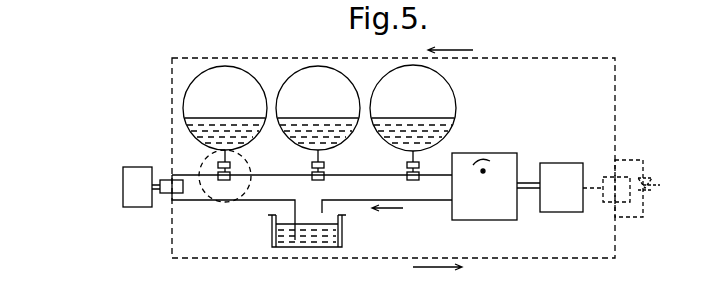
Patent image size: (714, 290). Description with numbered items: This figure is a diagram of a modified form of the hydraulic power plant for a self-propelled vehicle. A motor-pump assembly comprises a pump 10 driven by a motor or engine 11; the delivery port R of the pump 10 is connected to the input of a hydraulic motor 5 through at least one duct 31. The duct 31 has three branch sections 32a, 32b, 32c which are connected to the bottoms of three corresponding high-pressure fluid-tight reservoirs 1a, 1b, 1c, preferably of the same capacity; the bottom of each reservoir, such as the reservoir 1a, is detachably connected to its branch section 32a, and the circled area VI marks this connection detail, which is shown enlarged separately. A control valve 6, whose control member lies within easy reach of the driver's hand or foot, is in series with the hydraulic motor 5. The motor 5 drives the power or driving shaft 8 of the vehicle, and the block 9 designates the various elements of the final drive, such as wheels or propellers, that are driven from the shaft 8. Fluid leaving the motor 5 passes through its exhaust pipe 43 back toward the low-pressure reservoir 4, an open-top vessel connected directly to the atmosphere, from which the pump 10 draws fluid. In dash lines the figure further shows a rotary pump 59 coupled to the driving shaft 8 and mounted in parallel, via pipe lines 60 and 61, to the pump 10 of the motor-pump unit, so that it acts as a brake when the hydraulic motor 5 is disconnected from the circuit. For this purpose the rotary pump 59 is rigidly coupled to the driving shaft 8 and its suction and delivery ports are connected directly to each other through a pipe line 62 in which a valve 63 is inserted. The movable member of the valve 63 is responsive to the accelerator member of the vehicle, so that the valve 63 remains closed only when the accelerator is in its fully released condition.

The high-pressure fluid-tight reservoir 1a is at (210, 67).
The high-pressure fluid-tight reservoir 1b is at (290, 72).
The high-pressure fluid-tight reservoir 1c is at (385, 73).
The low-pressure reservoir 4 is at (272, 237).
The hydraulic motor 5 is at (477, 220).
The control valve 6 is at (483, 171).
The driving shaft 8 is at (598, 190).
The final drive 9 is at (560, 163).
The pump 10 is at (170, 195).
The motor or engine 11 is at (123, 199).
The duct 31 is at (277, 173).
The branch section 32a is at (225, 180).
The branch section 32b is at (322, 180).
The branch section 32c is at (414, 180).
The exhaust pipe 43 is at (398, 200).
The rotary pump 59 is at (608, 177).
The pipe line 60 is at (535, 58).
The pipe line 61 is at (340, 259).
The pipe line 62 is at (641, 160).
The valve 63 is at (657, 192).
The delivery port R is at (172, 176).
The section indicator VI is at (200, 167).